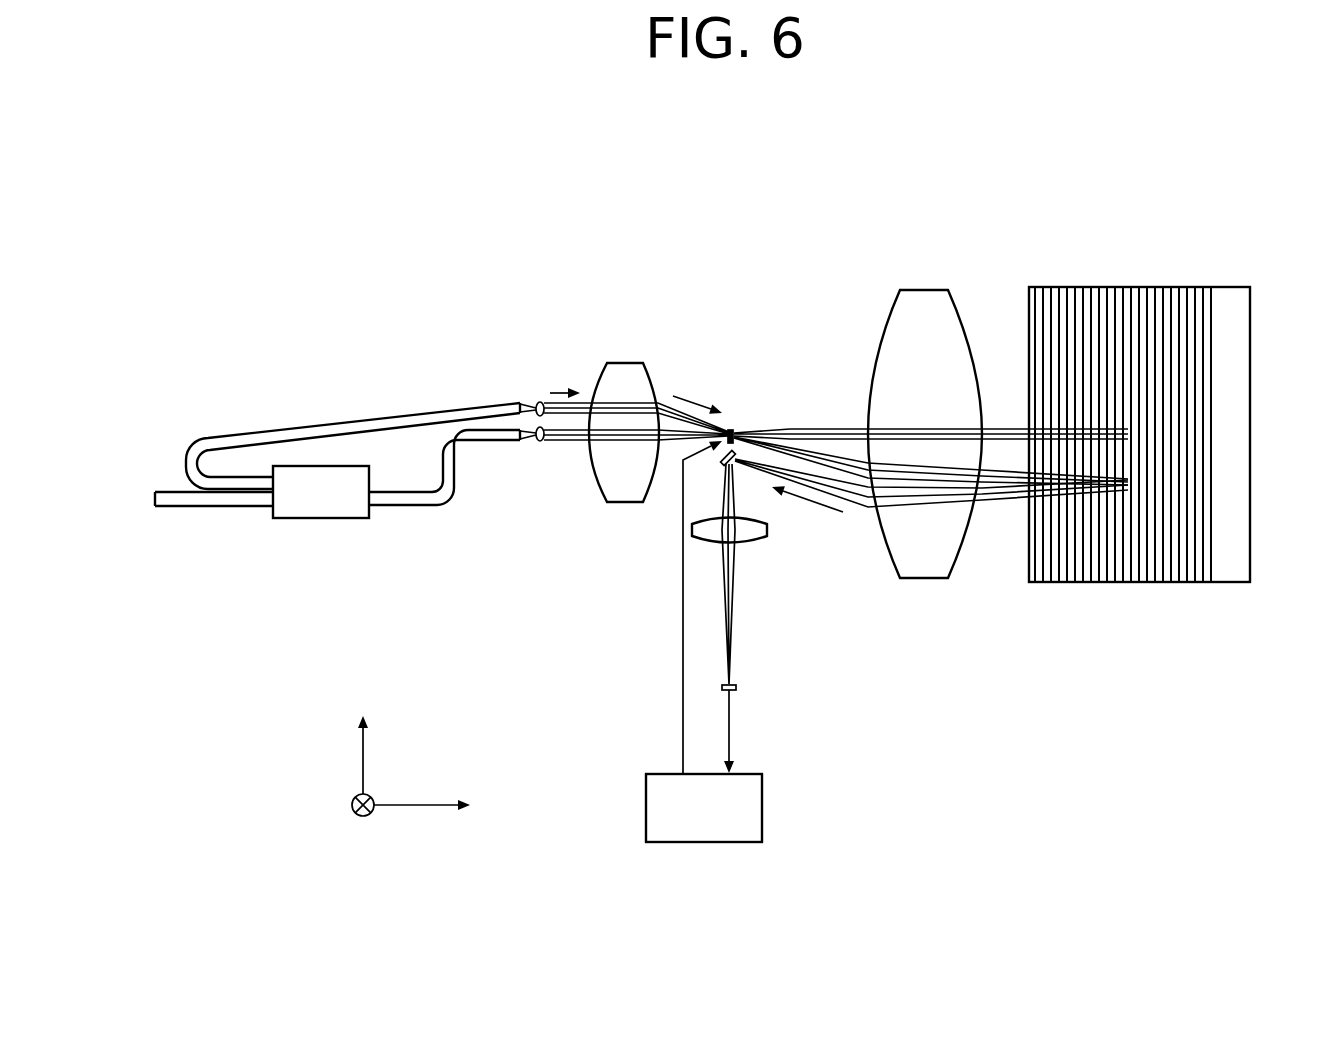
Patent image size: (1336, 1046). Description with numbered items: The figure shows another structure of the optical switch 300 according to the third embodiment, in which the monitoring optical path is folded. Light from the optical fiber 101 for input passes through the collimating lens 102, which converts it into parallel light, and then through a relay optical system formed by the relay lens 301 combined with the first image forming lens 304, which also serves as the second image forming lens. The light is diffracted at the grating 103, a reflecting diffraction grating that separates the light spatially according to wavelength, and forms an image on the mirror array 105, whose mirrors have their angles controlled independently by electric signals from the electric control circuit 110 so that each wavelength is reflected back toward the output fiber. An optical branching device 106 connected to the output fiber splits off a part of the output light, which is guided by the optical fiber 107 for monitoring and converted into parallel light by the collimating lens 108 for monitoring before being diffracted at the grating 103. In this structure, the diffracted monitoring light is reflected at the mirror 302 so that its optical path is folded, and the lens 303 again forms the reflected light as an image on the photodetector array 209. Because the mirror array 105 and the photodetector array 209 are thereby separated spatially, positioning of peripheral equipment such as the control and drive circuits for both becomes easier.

The optical switch 300 is at (432, 210).
The relay lens 301 is at (617, 363).
The mirror 302 is at (737, 463).
The lens 303 is at (752, 543).
The first image forming lens 304 is at (913, 290).
The mirror array 105 is at (732, 429).
The optical branching device 106 is at (317, 518).
The optical fiber for monitoring 107 is at (338, 412).
The collimating lens for monitoring 108 is at (540, 400).
The optical fiber 101 is at (490, 445).
The collimating lens 102 is at (542, 443).
The grating 103 is at (1102, 582).
The photodetector array 209 is at (737, 687).
The electric control circuit 110 is at (720, 842).